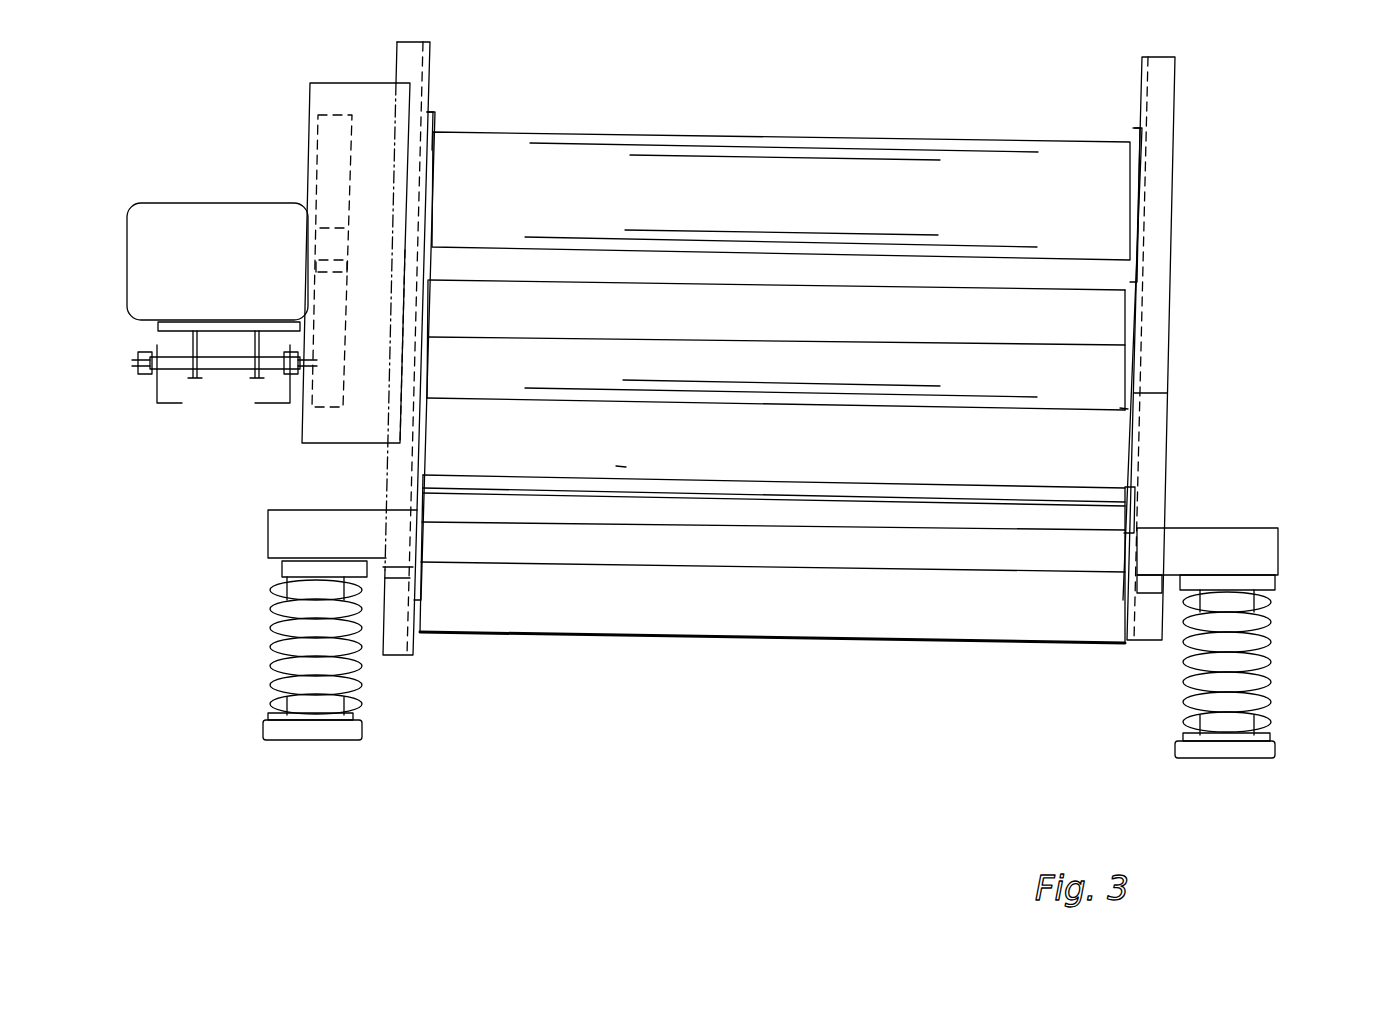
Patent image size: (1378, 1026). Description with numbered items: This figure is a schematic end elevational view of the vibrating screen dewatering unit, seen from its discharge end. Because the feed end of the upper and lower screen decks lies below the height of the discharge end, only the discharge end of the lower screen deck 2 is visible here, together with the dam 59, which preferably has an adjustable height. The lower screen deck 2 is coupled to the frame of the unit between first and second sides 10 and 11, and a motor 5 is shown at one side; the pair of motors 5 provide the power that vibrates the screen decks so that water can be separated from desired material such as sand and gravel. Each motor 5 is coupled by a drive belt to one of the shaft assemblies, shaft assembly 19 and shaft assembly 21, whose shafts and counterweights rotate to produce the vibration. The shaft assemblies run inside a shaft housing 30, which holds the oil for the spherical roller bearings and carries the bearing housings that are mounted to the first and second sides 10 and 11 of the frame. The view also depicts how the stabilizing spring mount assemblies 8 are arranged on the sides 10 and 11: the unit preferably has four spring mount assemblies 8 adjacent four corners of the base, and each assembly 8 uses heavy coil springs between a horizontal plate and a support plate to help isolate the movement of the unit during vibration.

The lower screen deck 2 is at (629, 462).
The motor 5 is at (238, 268).
The stabilizing spring mount assembly 8 is at (242, 655).
The first side 10 is at (1176, 170).
The second side 11 is at (397, 66).
The shaft assembly 19 is at (1013, 127).
The shaft assembly 21 is at (1046, 416).
The shaft housing 30 is at (776, 303).
The dam 59 is at (760, 481).